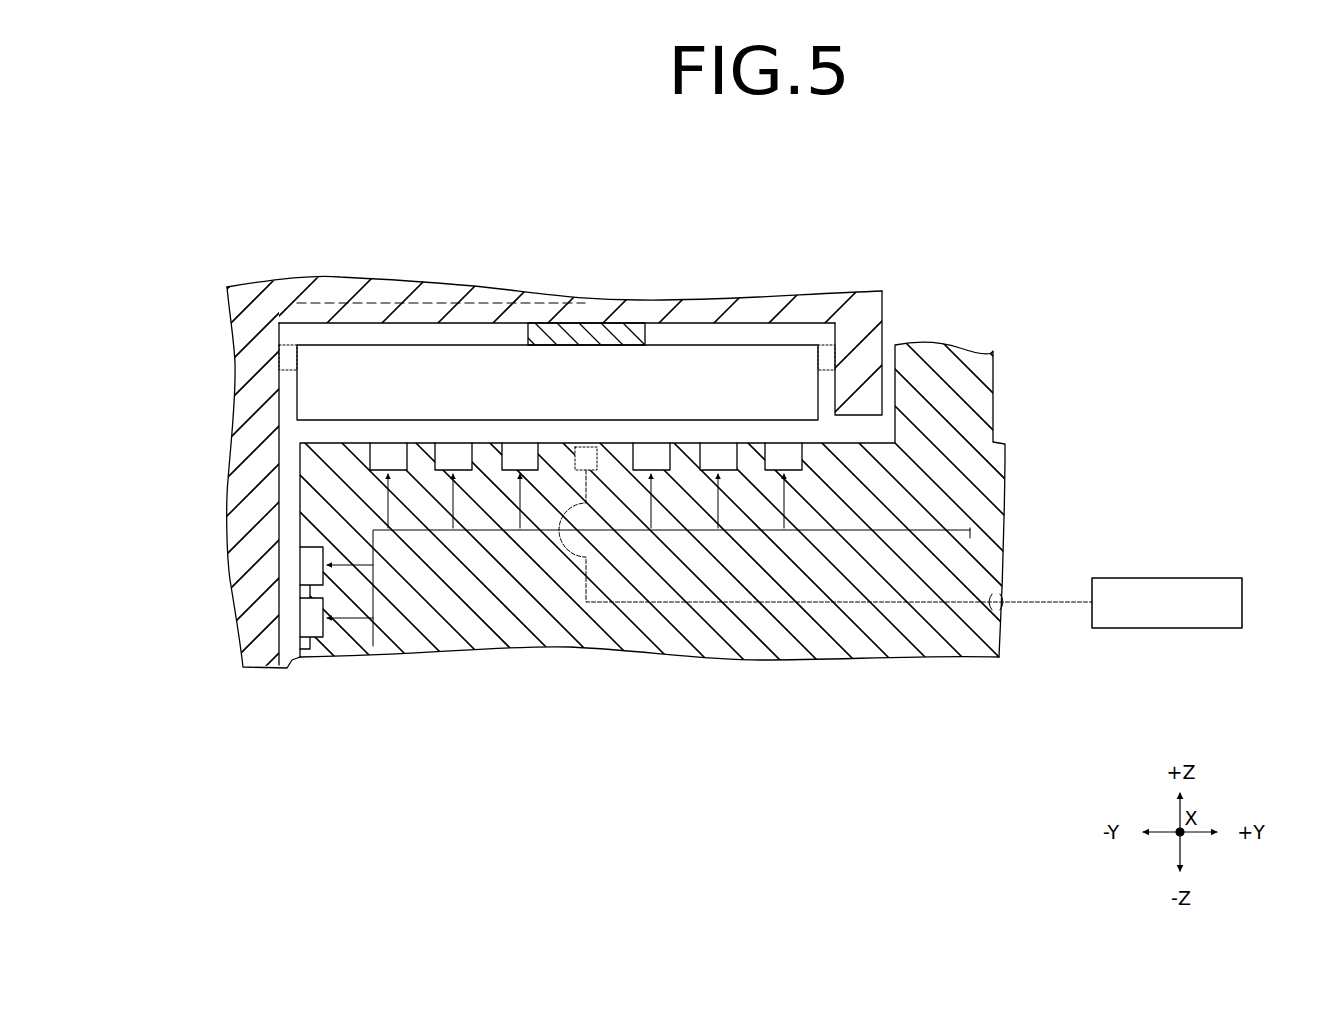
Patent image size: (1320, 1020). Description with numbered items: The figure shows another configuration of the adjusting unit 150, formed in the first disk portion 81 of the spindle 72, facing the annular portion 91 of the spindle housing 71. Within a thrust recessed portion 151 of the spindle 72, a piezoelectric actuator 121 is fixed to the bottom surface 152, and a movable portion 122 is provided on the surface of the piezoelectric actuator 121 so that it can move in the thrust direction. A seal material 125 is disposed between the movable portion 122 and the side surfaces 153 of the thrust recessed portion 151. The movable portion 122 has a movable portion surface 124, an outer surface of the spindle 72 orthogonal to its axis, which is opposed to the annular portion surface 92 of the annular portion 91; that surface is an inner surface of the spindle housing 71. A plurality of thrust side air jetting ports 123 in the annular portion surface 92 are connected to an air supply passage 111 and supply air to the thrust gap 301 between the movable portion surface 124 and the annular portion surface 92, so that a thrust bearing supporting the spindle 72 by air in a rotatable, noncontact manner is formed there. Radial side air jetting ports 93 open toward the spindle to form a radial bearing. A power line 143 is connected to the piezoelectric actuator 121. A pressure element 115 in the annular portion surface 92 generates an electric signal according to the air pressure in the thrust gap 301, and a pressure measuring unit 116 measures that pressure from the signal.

The spindle housing 71 is at (1008, 333).
The spindle 72 is at (874, 266).
The first disk portion 81 is at (884, 320).
The annular portion 91 is at (985, 620).
The annular portion surface 92 is at (808, 445).
The radial side air jetting ports 93 is at (298, 566).
The air supply passage 111 is at (945, 530).
The pressure element 115 is at (557, 535).
The pressure measuring unit 116 is at (1160, 578).
The piezoelectric actuator 121 is at (603, 323).
The movable portion 122 is at (278, 378).
The thrust side air jetting ports 123 is at (375, 460).
The movable portion surface 124 is at (463, 425).
The seal material 125 is at (226, 295).
The power line 143 is at (443, 302).
The adjusting unit 150 is at (271, 410).
The thrust recessed portion 151 is at (337, 332).
The bottom surface 152 is at (440, 333).
The side surfaces 153 is at (288, 386).
The thrust gap 301 is at (312, 427).